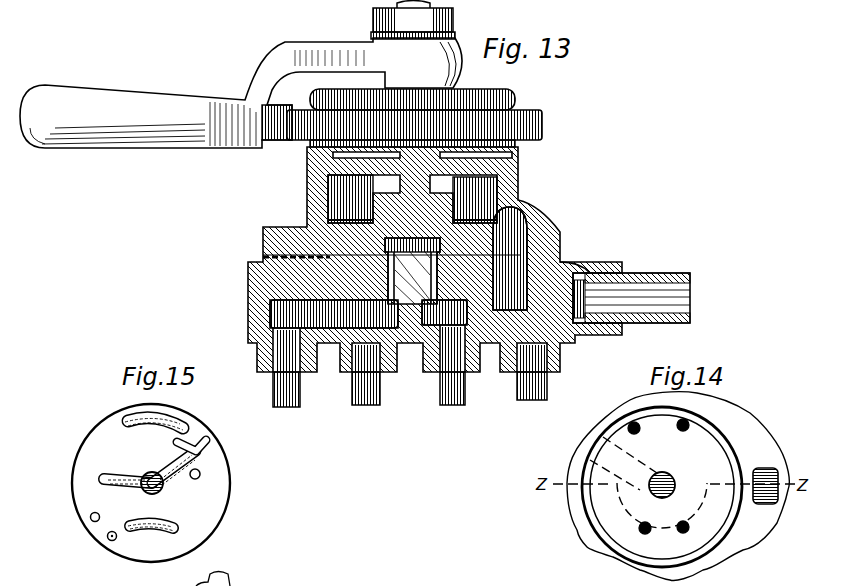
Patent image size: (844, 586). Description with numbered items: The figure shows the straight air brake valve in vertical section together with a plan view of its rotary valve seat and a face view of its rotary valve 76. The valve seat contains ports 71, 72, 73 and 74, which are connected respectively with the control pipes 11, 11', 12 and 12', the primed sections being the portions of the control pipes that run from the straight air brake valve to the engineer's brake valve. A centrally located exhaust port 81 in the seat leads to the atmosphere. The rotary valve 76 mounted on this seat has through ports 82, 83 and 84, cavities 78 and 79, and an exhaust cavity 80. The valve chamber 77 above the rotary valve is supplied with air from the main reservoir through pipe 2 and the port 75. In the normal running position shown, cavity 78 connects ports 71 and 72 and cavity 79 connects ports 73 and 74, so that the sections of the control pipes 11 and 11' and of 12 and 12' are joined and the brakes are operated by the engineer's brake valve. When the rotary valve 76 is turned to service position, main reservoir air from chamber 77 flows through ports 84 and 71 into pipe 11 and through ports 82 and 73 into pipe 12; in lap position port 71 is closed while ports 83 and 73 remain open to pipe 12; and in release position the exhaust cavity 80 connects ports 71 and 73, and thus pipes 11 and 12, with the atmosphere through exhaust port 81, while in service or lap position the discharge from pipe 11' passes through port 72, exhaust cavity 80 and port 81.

In FIG. 13, the pipe 2 is at (668, 275).
In FIG. 13, the control pipe 11 is at (452, 378).
In FIG. 13, the control pipe section 11' is at (286, 379).
In FIG. 13, the control pipe 12 is at (532, 387).
In FIG. 13, the control pipe section 12' is at (366, 387).
In FIG. 13, the port 71 is at (437, 275).
In FIG. 14, the port 71 is at (682, 533).
In FIG. 13, the port 72 is at (388, 275).
In FIG. 14, the port 72 is at (645, 534).
In FIG. 14, the port 73 is at (688, 422).
In FIG. 14, the port 74 is at (632, 424).
In FIG. 13, the port 75 is at (520, 241).
In FIG. 14, the port 75 is at (768, 504).
In FIG. 13, the rotary valve 76 is at (510, 214).
In FIG. 15, the rotary valve 76 is at (228, 495).
In FIG. 14, the rotary valve 76 is at (662, 487).
In FIG. 13, the valve chamber 77 is at (345, 190).
In FIG. 13, the cavity 78 is at (395, 245).
In FIG. 15, the cavity 78 is at (165, 531).
In FIG. 15, the cavity 79 is at (178, 420).
In FIG. 15, the exhaust cavity 80 is at (162, 485).
In FIG. 14, the exhaust port 81 is at (675, 481).
In FIG. 15, the through port 82 is at (110, 541).
In FIG. 15, the through port 83 is at (90, 518).
In FIG. 15, the through port 84 is at (201, 472).